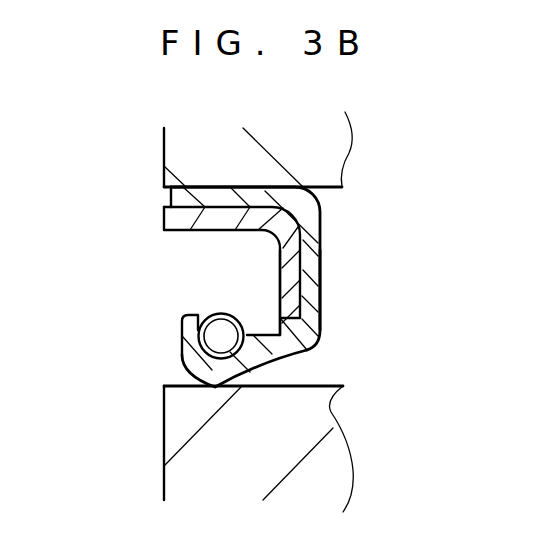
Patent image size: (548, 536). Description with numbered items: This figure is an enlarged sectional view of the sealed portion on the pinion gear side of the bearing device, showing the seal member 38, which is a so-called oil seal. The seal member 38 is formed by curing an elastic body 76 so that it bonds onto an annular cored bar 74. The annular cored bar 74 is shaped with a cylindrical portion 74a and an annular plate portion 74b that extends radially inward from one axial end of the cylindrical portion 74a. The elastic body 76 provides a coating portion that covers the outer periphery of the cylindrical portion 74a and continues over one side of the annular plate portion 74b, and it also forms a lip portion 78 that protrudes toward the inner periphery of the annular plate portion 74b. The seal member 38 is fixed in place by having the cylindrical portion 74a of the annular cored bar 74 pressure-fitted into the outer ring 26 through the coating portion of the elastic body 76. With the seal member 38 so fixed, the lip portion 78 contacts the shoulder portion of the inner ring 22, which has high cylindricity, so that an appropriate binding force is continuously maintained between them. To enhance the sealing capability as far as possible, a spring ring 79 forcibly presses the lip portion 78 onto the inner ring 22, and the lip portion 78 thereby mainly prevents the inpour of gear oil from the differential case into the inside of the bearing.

The inner ring 22 is at (192, 451).
The outer ring 26 is at (187, 150).
The seal member 38 is at (322, 232).
The annular cored bar 74 is at (82, 232).
The cylindrical portion 74a is at (217, 220).
The annular plate portion 74b is at (288, 265).
The elastic body 76 is at (322, 292).
The lip portion 78 is at (199, 371).
The spring ring 79 is at (222, 313).